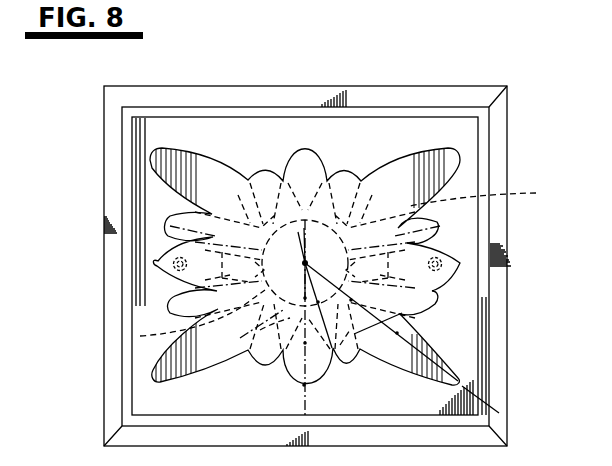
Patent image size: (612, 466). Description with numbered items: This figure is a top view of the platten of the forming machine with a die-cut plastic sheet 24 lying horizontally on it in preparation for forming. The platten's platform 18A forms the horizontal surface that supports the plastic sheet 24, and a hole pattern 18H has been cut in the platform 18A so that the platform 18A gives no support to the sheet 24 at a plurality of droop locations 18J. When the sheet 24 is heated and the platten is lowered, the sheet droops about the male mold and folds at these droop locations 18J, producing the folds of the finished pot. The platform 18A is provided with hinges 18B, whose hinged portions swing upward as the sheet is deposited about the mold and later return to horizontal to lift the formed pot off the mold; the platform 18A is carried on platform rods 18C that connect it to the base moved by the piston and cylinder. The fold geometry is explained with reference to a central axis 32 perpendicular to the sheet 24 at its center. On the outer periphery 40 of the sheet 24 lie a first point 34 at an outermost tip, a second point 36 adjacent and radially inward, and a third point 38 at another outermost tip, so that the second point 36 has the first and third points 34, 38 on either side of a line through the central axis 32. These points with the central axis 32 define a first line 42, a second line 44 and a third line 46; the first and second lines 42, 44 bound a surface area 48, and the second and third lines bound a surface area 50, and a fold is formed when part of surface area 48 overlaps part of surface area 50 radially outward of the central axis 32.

The platform 18A is at (147, 145).
The droop locations 18J is at (249, 168).
The hole pattern 18H is at (491, 197).
The platform rods 18C is at (172, 264).
The hinges 18B is at (140, 336).
The plastic sheet 24 is at (447, 160).
The central axis 32 is at (305, 263).
The surface area 50 is at (400, 314).
The third line 46 is at (445, 358).
The third point 38 is at (457, 380).
The outer periphery 40 is at (197, 381).
The surface area 48 is at (280, 366).
The first point 34 is at (300, 384).
The first line 42 is at (306, 403).
The second line 44 is at (332, 348).
The second point 36 is at (332, 348).